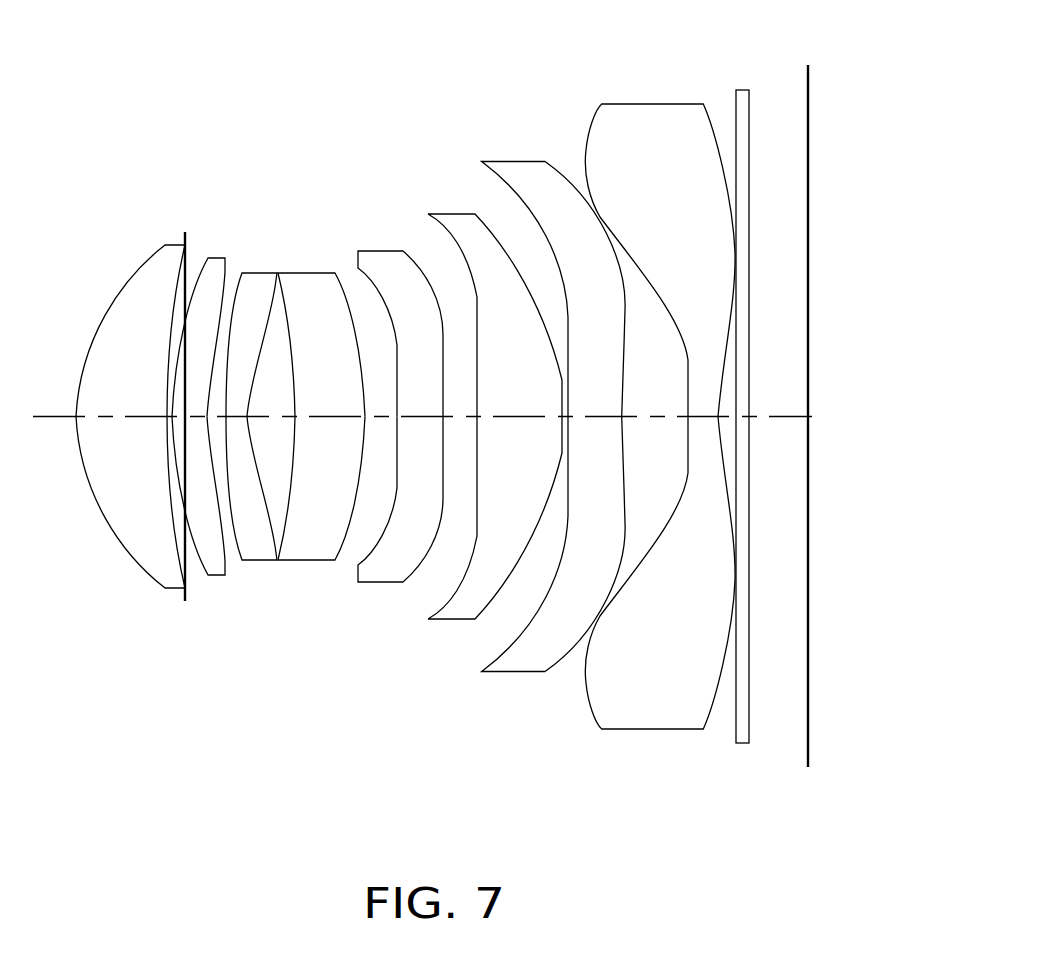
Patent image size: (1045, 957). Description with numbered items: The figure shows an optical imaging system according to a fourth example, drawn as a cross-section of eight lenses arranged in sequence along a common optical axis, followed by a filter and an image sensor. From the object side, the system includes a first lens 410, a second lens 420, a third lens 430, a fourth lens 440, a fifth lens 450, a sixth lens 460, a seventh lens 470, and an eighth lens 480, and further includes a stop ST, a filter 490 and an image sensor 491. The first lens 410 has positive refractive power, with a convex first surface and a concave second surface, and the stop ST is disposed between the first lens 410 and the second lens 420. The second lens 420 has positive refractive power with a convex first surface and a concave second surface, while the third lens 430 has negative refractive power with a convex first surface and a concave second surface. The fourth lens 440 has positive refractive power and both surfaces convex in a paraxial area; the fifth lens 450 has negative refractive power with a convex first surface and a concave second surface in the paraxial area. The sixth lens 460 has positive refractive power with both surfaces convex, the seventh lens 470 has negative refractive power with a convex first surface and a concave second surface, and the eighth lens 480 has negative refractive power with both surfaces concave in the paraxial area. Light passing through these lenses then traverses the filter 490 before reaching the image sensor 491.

The first lens 410 is at (143, 277).
The stop ST is at (185, 231).
The second lens 420 is at (219, 267).
The third lens 430 is at (260, 277).
The fourth lens 440 is at (310, 277).
The fifth lens 450 is at (383, 261).
The sixth lens 460 is at (453, 218).
The seventh lens 470 is at (518, 163).
The eighth lens 480 is at (650, 108).
The filter 490 is at (742, 90).
The image sensor 491 is at (808, 65).